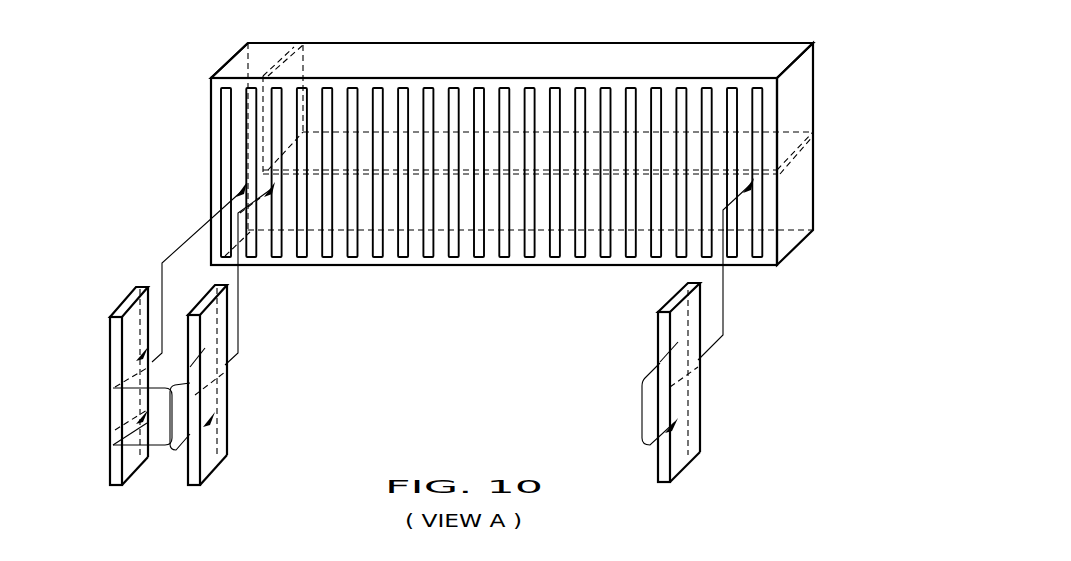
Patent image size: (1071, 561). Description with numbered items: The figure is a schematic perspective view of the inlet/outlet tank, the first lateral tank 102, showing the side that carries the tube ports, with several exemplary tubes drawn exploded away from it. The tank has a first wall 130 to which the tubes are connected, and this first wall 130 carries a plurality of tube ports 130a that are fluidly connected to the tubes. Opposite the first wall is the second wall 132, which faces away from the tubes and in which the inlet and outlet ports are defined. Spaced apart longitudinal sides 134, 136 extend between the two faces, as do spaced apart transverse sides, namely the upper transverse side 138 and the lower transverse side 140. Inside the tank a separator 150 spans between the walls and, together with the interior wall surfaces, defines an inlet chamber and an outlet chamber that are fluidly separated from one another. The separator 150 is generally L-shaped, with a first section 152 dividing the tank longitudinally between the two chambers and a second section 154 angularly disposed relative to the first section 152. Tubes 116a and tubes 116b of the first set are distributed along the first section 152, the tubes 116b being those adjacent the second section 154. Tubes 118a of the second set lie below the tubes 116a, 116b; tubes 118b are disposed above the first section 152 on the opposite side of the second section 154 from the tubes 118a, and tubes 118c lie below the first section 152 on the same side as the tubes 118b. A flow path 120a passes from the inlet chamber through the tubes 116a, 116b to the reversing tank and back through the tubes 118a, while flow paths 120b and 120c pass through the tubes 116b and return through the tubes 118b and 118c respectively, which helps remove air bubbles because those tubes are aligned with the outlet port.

The first lateral tank 102 is at (793, 106).
The first wall 130 is at (443, 258).
The tube ports 130a is at (405, 258).
The second wall 132 is at (815, 52).
The upper longitudinal side 134 is at (417, 62).
The longitudinal side 136 is at (632, 258).
The upper transverse side 138 is at (222, 72).
The lower transverse side 140 is at (795, 208).
The separator 150 is at (320, 55).
The first section 152 is at (493, 150).
The second section 154 is at (282, 64).
The tubes 116a is at (678, 340).
The tubes 116b is at (210, 364).
The tubes 118a is at (207, 442).
The tubes 118b is at (133, 322).
The tubes 118c is at (112, 460).
The flow path 120a is at (190, 440).
The flow path 120b is at (135, 360).
The flow path 120c is at (132, 425).